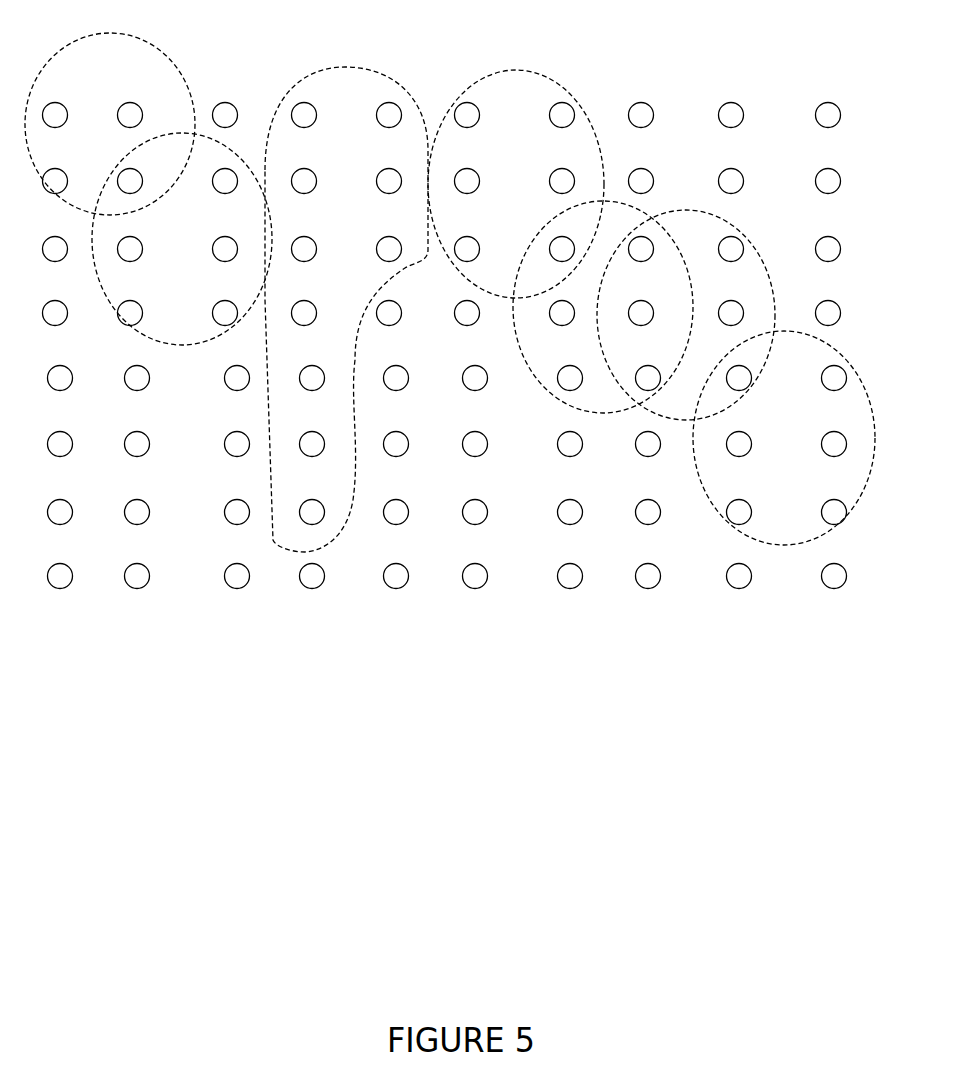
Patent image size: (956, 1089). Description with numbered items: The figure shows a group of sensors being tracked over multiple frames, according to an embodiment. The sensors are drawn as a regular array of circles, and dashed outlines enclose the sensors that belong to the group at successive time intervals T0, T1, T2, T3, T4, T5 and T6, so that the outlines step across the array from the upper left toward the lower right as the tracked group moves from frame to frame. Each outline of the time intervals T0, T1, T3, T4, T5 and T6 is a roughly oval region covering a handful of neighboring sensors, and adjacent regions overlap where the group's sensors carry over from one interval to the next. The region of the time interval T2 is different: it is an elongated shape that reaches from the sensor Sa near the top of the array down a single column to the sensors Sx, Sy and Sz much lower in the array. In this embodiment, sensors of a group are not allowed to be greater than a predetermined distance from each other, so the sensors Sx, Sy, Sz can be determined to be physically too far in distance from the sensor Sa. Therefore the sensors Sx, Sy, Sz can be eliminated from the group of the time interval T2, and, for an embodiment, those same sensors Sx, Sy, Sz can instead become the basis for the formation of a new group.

The time interval group T0 is at (110, 124).
The time interval group T1 is at (182, 239).
The time interval group T2 is at (346, 309).
The time interval group T3 is at (516, 184).
The time interval group T4 is at (603, 307).
The time interval group T5 is at (686, 315).
The time interval group T6 is at (784, 438).
The sensor Sa is at (311, 103).
The sensor Sx is at (308, 396).
The sensor Sy is at (308, 458).
The sensor Sz is at (309, 527).